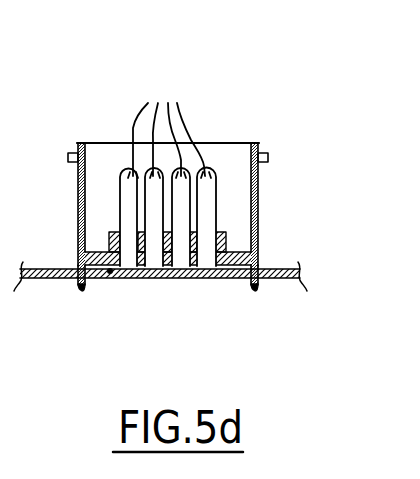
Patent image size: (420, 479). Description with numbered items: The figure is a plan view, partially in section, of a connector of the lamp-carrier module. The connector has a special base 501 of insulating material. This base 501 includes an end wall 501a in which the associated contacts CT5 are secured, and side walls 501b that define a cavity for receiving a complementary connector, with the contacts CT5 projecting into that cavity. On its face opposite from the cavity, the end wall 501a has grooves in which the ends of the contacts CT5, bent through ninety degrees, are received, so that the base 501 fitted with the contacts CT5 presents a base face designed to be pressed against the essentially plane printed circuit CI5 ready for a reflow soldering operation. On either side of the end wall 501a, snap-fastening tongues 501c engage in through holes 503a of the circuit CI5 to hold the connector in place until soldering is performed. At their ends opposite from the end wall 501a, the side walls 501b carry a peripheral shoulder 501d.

The base 501 is at (168, 233).
The end wall 501a is at (228, 277).
The side walls 501b is at (77, 193).
The snap-fastening tongues 501c is at (80, 287).
The peripheral shoulder 501d is at (72, 151).
The through holes 503a is at (252, 287).
The contacts CT5 is at (168, 167).
The printed circuit CI5 is at (35, 280).